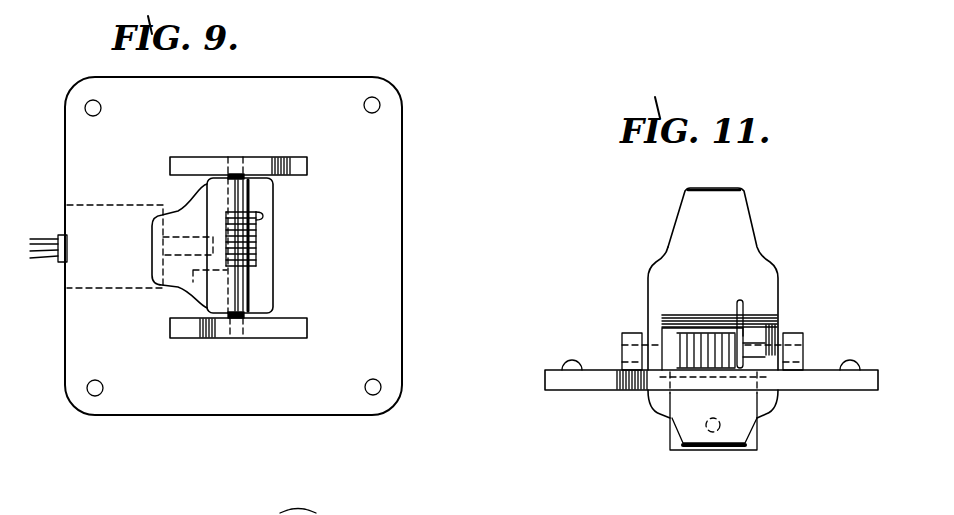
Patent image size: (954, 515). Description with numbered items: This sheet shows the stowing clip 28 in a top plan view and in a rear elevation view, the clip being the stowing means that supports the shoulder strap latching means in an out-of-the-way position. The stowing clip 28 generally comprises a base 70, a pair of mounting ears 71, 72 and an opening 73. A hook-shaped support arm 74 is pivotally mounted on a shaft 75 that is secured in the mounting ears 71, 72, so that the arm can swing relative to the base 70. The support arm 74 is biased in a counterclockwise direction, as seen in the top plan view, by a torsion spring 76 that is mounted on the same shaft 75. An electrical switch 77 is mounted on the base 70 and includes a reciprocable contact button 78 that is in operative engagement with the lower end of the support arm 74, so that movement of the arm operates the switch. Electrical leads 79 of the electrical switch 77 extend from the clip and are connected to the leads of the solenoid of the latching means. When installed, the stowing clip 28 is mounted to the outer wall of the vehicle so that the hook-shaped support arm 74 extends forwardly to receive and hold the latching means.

In FIG. 9, the stowing clip 28 is at (420, 144).
In FIG. 11, the stowing clip 28 is at (645, 392).
In FIG. 9, the base 70 is at (233, 246).
In FIG. 9, the mounting ear 71 is at (260, 332).
In FIG. 11, the mounting ear 71 is at (625, 338).
In FIG. 9, the mounting ear 72 is at (285, 158).
In FIG. 11, the mounting ear 72 is at (803, 336).
In FIG. 9, the opening 73 is at (267, 273).
In FIG. 11, the opening 73 is at (719, 342).
In FIG. 9, the hook-shaped support arm 74 is at (186, 220).
In FIG. 11, the hook-shaped support arm 74 is at (713, 303).
In FIG. 11, the shaft 75 is at (752, 350).
In FIG. 9, the torsion spring 76 is at (242, 232).
In FIG. 11, the torsion spring 76 is at (680, 330).
In FIG. 9, the electrical switch 77 is at (76, 294).
In FIG. 11, the electrical switch 77 is at (757, 443).
In FIG. 9, the reciprocable contact button 78 is at (186, 260).
In FIG. 11, the reciprocable contact button 78 is at (713, 432).
In FIG. 9, the electrical leads 79 is at (45, 257).